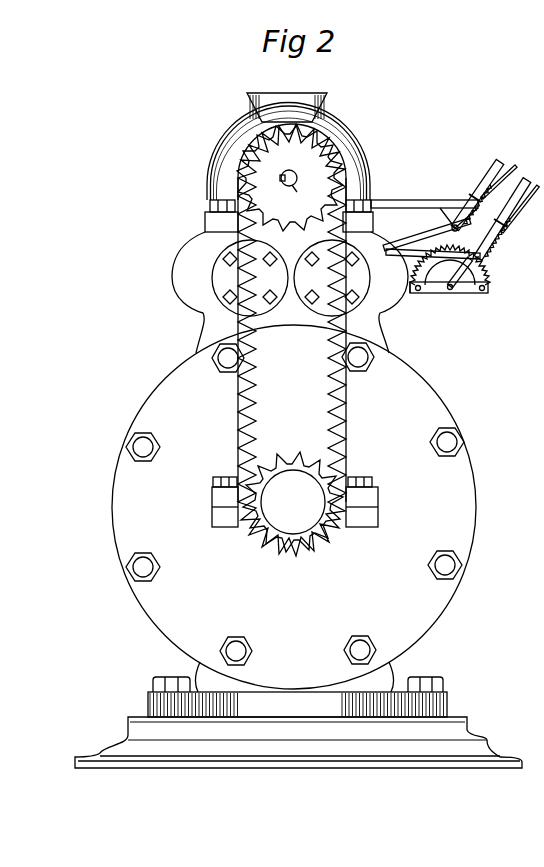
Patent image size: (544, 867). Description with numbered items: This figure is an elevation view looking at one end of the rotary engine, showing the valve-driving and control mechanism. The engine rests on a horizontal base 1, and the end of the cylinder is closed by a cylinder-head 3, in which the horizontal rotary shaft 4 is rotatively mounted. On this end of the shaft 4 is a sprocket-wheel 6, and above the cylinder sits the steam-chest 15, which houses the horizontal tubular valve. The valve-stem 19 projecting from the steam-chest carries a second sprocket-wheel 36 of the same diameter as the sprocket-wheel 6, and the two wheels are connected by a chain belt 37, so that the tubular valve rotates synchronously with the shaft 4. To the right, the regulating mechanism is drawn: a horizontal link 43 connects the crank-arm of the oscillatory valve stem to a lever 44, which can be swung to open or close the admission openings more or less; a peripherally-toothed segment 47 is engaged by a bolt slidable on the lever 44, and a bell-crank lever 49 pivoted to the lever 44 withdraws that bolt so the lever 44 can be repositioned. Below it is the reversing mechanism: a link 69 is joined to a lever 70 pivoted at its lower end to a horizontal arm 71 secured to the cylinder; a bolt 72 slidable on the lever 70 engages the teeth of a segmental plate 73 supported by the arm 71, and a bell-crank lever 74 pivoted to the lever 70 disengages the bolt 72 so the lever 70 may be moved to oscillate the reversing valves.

The horizontal base 1 is at (298, 715).
The cylinder-head 3 is at (294, 507).
The horizontal rotary shaft 4 is at (293, 502).
The sprocket-wheel 6 is at (298, 458).
The steam-chest 15 is at (212, 150).
The valve-stem 19 is at (295, 192).
The sprocket-wheel 36 is at (290, 178).
The chain belt 37 is at (349, 412).
The horizontal link 43 is at (412, 206).
The lever 44 is at (470, 195).
The peripherally-toothed segment 47 is at (444, 224).
The bell-crank lever 49 is at (504, 172).
The link 69 is at (416, 258).
The lever 70 is at (466, 293).
The horizontal arm 71 is at (426, 293).
The bolt 72 is at (505, 240).
The segmental plate 73 is at (488, 279).
The bell-crank lever 74 is at (520, 205).